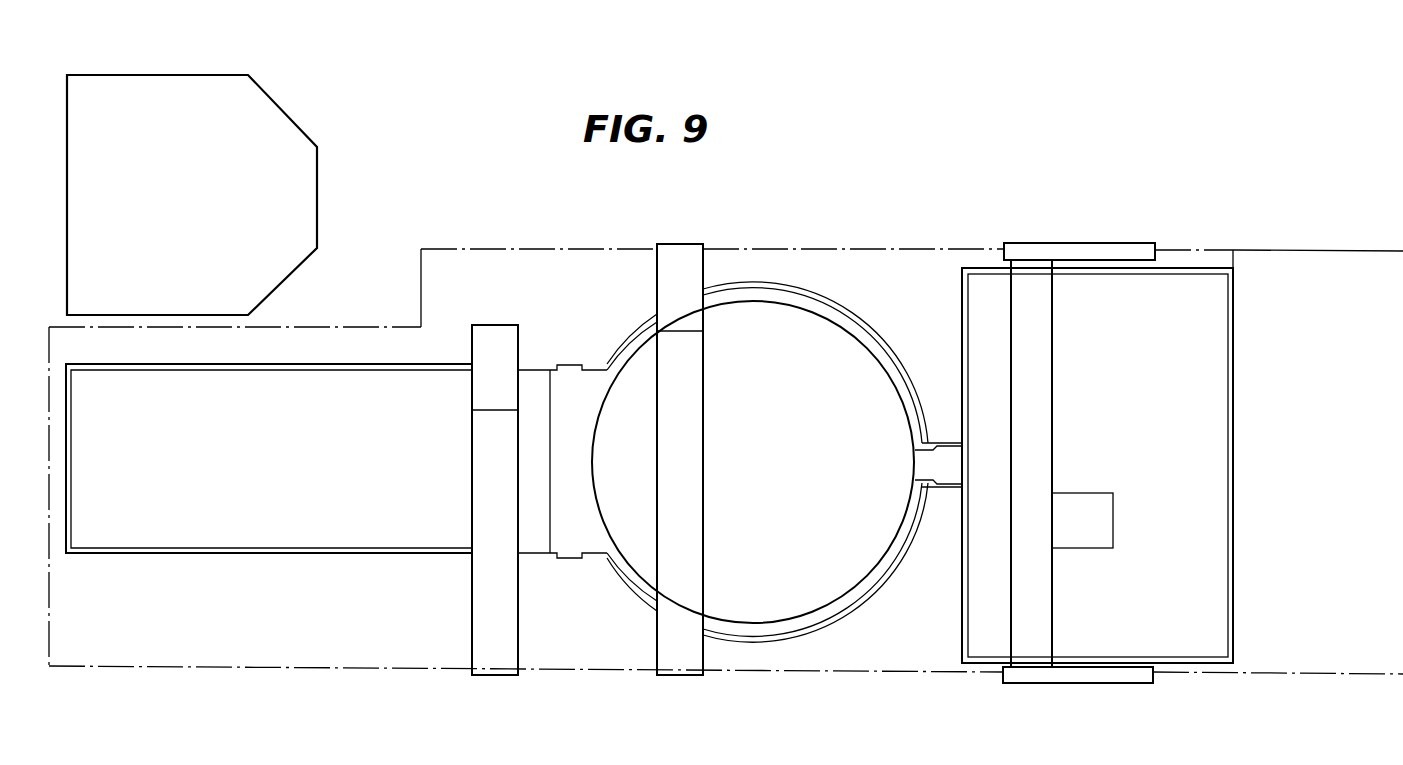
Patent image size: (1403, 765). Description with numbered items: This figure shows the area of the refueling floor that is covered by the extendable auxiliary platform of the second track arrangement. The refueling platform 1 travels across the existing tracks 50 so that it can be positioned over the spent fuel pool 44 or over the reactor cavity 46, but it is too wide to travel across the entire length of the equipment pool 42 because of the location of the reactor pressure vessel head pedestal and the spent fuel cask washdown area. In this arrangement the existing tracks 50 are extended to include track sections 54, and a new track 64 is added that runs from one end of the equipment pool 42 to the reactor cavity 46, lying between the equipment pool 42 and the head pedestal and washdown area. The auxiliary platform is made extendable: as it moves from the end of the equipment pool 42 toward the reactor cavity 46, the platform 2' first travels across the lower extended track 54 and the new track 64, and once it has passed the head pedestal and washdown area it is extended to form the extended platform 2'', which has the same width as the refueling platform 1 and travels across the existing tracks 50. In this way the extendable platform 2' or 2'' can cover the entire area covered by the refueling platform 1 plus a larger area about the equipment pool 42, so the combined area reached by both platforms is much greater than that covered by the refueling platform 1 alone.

The new track 64 is at (300, 326).
The track sections 54 is at (540, 247).
The tracks 50 is at (892, 247).
The equipment pool 42 is at (198, 522).
The platform 2' is at (506, 524).
The extended platform 2'' is at (698, 483).
The reactor cavity 46 is at (808, 570).
The spent fuel pool 44 is at (1200, 545).
The refueling platform 1 is at (1108, 680).